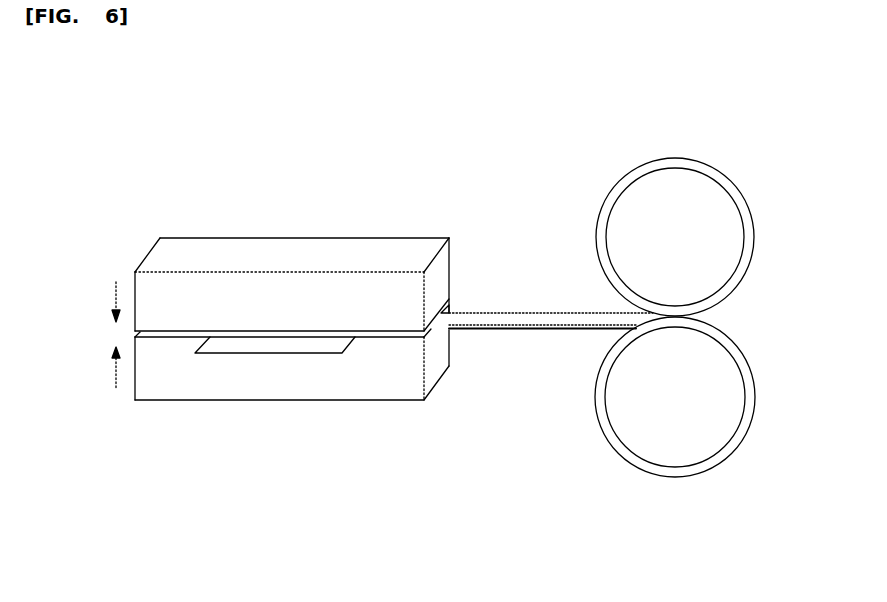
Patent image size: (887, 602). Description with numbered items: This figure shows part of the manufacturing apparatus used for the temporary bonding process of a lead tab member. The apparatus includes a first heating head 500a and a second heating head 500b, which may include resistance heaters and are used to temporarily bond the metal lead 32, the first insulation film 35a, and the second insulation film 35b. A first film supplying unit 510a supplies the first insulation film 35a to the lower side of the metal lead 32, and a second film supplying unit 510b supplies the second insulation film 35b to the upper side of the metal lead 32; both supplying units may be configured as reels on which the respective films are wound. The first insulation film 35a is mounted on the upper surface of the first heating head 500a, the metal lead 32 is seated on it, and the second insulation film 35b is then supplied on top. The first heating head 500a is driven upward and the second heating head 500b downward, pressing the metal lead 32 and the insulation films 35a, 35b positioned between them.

The metal lead 32 is at (242, 353).
The first insulation film 35a is at (522, 335).
The second insulation film 35b is at (550, 318).
The first heating head 500a is at (292, 378).
The second heating head 500b is at (303, 247).
The first film supplying unit 510a is at (677, 443).
The second film supplying unit 510b is at (678, 177).